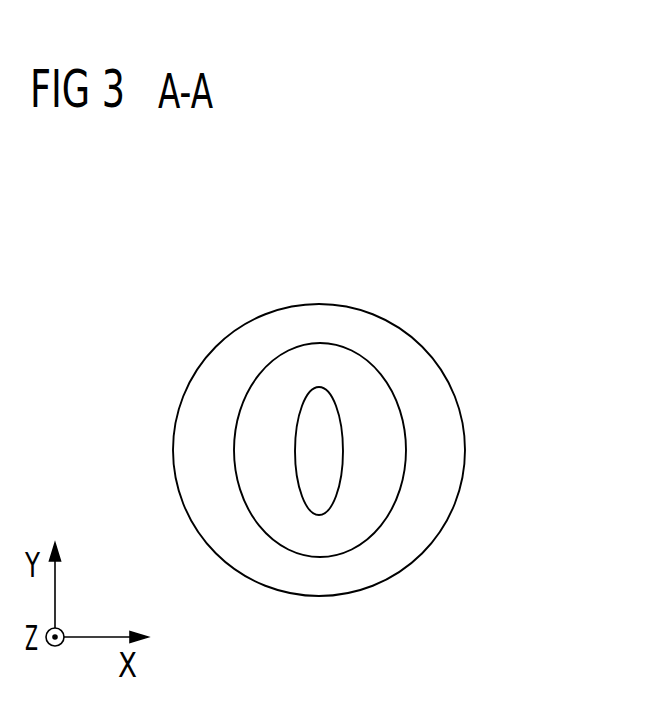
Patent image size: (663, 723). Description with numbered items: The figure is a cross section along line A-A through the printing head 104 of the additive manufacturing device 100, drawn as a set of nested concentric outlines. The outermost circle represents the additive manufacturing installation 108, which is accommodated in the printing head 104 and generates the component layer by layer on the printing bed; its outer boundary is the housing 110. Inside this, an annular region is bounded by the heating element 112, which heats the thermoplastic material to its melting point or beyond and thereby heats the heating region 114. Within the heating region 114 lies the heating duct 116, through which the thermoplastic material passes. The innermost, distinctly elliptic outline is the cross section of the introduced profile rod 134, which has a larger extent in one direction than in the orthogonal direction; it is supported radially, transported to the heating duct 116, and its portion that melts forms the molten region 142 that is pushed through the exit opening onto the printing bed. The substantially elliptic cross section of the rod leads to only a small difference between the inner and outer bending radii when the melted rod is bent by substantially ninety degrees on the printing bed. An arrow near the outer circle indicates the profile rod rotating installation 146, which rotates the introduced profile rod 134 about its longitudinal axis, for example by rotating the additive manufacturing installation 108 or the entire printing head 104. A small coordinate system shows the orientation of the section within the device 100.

The additive manufacturing device 100 is at (477, 215).
The printing head 104 is at (192, 243).
The additive manufacturing installation 108 is at (160, 308).
The housing 110 is at (197, 392).
The heating element 112 is at (355, 376).
The heating region 114 is at (388, 422).
The heating duct 116 is at (342, 477).
The introduced profile rod 134 is at (327, 493).
The molten region 142 is at (307, 468).
The profile rod rotating installation 146 is at (280, 590).